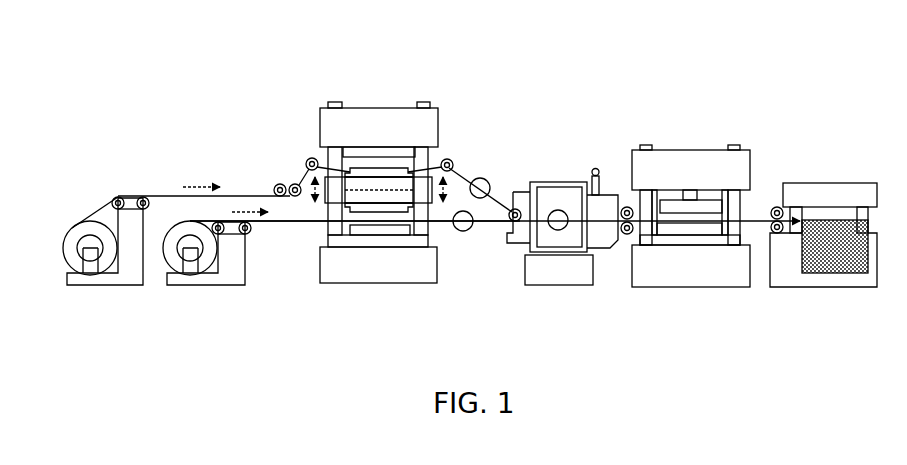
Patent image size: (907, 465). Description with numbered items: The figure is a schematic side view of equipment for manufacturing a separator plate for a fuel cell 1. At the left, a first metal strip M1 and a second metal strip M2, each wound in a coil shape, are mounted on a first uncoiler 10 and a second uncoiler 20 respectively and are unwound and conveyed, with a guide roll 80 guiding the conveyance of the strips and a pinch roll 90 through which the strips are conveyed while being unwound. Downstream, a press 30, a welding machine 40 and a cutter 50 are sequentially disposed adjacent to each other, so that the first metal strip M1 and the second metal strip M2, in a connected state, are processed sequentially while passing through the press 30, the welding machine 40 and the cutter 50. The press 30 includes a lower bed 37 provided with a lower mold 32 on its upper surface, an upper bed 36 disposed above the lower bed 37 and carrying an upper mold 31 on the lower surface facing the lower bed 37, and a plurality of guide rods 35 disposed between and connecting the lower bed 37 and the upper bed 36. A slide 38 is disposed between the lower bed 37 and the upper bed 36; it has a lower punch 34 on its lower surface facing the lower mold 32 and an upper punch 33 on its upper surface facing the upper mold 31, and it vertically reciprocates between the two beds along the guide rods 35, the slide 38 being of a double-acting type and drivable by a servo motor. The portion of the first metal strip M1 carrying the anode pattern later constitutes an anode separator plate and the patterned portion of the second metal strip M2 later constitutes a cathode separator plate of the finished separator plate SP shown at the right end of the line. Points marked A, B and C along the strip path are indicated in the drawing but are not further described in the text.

The equipment for manufacturing a separator plate for a fuel cell 1 is at (508, 28).
The first uncoiler 10 is at (107, 291).
The second uncoiler 20 is at (207, 291).
The press 30 is at (355, 90).
The upper mold 31 is at (360, 148).
The lower mold 32 is at (368, 230).
The upper punch 33 is at (345, 172).
The lower punch 34 is at (362, 212).
The guide rod 35 is at (423, 229).
The upper bed 36 is at (388, 120).
The lower bed 37 is at (397, 276).
The slide 38 is at (417, 183).
The welding machine 40 is at (553, 165).
The cutter 50 is at (688, 138).
The guide roll 80 is at (306, 162).
The pinch roll 90 is at (624, 207).
The first web path A is at (481, 179).
The second web path B is at (463, 231).
The laminating roller C is at (558, 231).
The first metal strip M1 is at (167, 190).
The second metal strip M2 is at (287, 231).
The separator plate SP is at (833, 209).